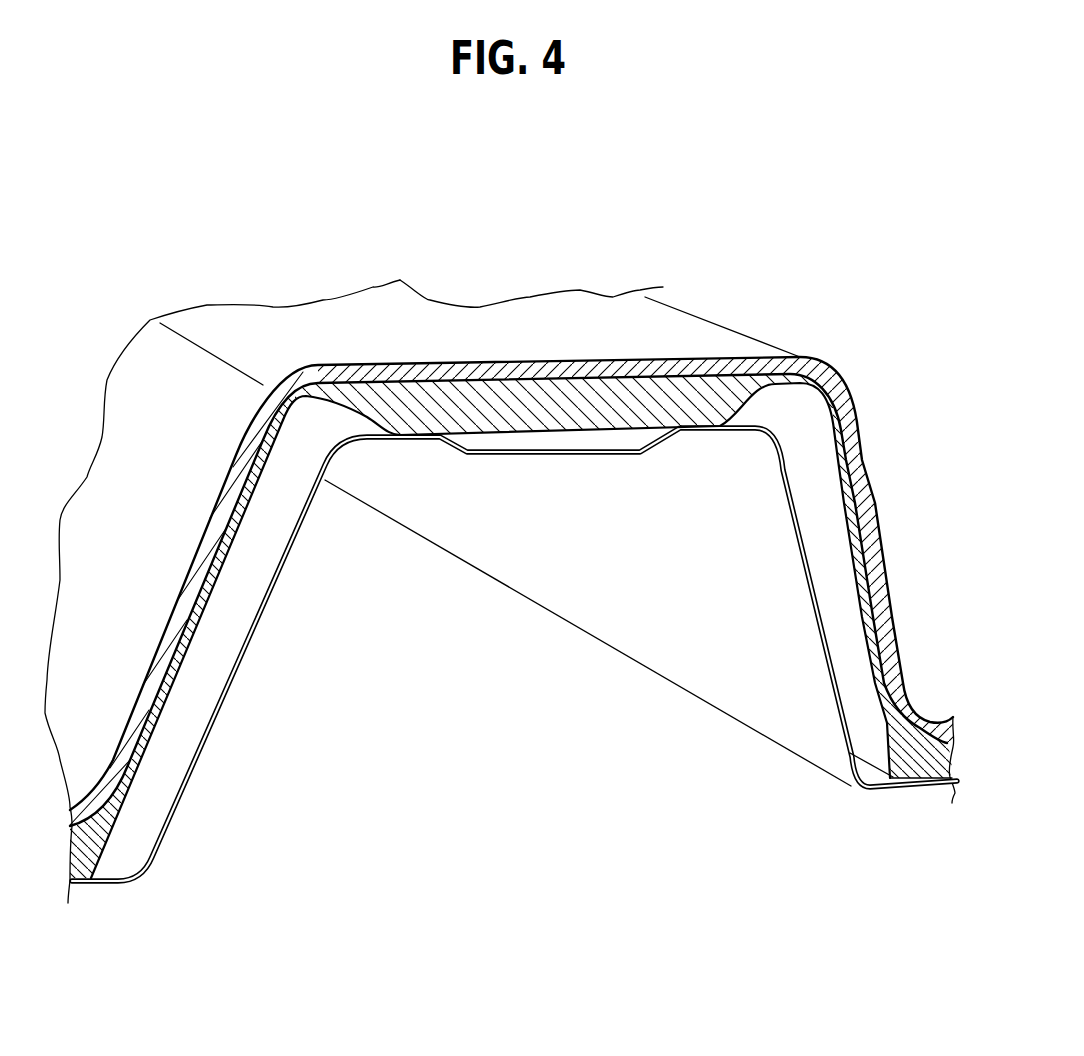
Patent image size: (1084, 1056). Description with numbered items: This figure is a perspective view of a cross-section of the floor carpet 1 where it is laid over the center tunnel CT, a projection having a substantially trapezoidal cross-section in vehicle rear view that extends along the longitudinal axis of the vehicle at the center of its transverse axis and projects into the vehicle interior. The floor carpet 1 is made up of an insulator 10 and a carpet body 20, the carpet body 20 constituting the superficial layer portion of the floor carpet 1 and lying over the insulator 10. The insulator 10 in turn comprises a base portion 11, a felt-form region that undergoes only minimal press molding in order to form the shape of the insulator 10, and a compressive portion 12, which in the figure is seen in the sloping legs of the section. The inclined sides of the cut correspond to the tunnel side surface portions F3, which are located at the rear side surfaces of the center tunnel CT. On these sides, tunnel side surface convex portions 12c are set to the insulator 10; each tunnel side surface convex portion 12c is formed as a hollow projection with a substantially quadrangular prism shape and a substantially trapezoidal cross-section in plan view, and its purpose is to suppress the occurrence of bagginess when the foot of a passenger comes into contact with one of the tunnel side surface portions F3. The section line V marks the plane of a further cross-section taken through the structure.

The floor carpet 1 is at (511, 531).
The insulator 10 is at (511, 557).
The base portion 11 is at (557, 412).
The compressive portion 12 is at (514, 650).
The tunnel side surface convex portion 12c is at (193, 617).
The carpet body 20 is at (697, 367).
The tunnel side surface portion F3 is at (205, 471).
The section line V- V is at (150, 609).
The center tunnel CT is at (193, 770).